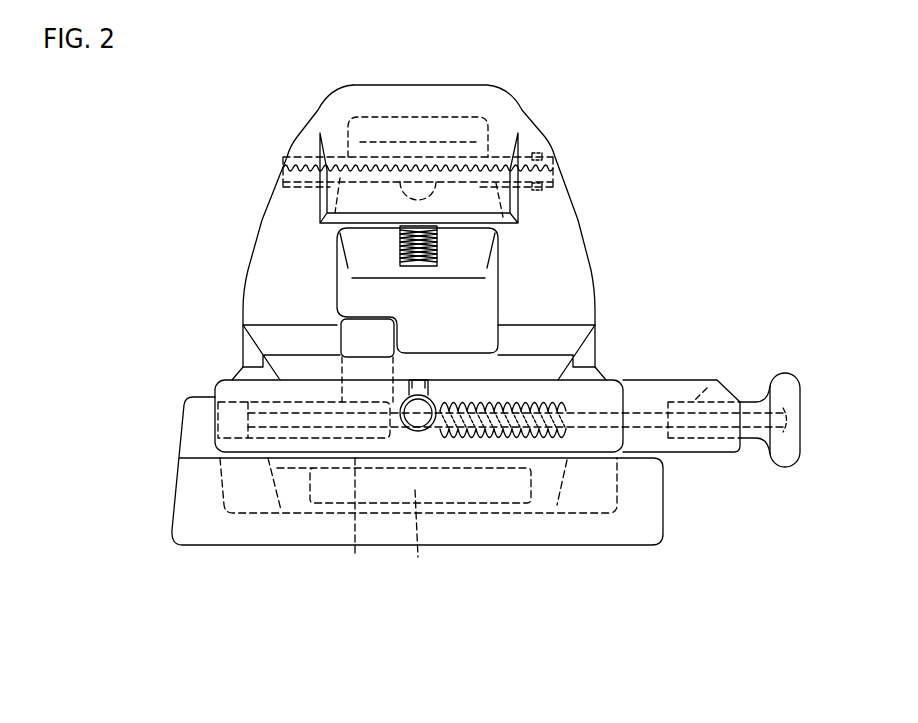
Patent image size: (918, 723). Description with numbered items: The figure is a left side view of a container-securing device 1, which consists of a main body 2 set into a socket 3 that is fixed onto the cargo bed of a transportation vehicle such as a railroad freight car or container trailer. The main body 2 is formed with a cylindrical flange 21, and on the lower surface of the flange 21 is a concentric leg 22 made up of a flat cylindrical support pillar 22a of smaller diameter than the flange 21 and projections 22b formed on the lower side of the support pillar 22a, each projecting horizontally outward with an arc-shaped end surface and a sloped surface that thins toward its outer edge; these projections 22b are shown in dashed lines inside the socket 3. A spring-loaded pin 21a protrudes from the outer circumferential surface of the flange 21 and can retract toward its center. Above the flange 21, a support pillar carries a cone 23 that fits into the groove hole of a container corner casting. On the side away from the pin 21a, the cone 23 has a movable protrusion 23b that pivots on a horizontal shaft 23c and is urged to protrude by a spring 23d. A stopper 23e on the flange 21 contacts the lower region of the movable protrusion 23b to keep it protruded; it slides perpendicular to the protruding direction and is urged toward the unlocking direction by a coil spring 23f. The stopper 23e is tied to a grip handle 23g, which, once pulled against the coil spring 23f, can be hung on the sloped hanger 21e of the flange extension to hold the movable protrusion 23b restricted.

The container-securing device 1 is at (248, 114).
The main body 2 is at (580, 223).
The socket 3 is at (648, 514).
The cylindrical flange 21 is at (653, 390).
The pin 21a is at (405, 396).
The hanger 21e is at (727, 377).
The leg 22 is at (440, 589).
The support pillar 22a is at (363, 526).
The projections 22b is at (417, 542).
The cone 23 is at (568, 256).
The movable protrusion 23b is at (352, 296).
The horizontal shaft 23c is at (560, 168).
The spring 23d is at (402, 252).
The stopper 23e is at (362, 343).
The coil spring 23f is at (546, 445).
The grip handle 23g is at (787, 390).